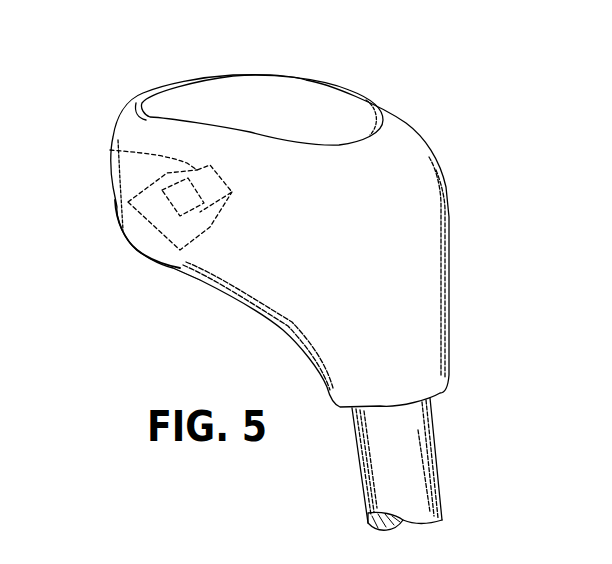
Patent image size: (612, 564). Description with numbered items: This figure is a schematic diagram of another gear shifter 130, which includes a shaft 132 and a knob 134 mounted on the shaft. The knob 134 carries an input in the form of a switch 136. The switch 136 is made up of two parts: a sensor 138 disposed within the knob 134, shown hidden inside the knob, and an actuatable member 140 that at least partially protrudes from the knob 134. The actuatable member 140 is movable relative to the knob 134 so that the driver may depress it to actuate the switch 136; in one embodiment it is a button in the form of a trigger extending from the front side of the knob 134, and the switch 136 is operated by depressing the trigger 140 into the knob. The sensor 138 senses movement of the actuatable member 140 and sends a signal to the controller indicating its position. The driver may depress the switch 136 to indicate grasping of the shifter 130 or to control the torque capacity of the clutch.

The gear shifter 130 is at (160, 62).
The shaft 132 is at (439, 460).
The knob 134 is at (403, 133).
The switch 136 is at (142, 277).
The sensor 138 is at (110, 150).
The actuatable member 140 is at (127, 253).